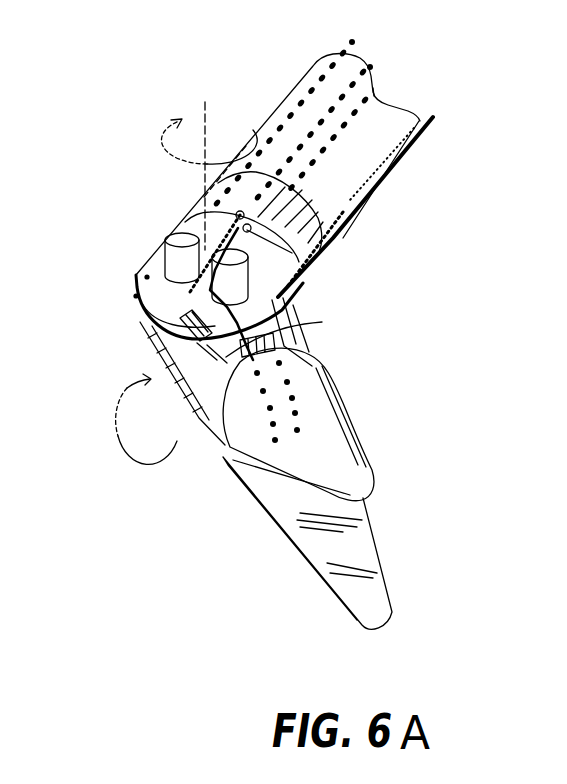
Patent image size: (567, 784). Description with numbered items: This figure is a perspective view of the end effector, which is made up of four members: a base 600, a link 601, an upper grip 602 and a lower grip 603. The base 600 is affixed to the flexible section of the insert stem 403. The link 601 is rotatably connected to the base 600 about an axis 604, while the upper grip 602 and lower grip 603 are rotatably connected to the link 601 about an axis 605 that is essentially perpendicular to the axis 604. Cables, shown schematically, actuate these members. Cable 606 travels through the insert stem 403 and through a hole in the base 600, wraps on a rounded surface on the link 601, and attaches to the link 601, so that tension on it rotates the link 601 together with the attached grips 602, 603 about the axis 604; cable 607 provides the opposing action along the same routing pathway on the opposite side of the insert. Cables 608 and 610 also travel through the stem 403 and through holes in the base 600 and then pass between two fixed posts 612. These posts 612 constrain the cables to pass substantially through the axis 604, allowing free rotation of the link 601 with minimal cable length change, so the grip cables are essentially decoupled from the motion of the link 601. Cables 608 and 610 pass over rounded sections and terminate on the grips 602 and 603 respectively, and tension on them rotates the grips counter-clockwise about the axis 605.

The base 600 is at (340, 222).
The link 601 is at (293, 317).
The upper grip 602 is at (323, 418).
The lower grip 603 is at (362, 555).
The axis 604 is at (205, 172).
The axis 605 is at (196, 405).
The cable 606 is at (435, 117).
The cable 607 is at (337, 57).
The cable 608 is at (378, 65).
The cable 610 is at (380, 92).
The fixed posts 612 is at (232, 267).
The insert stem 403 is at (355, 178).